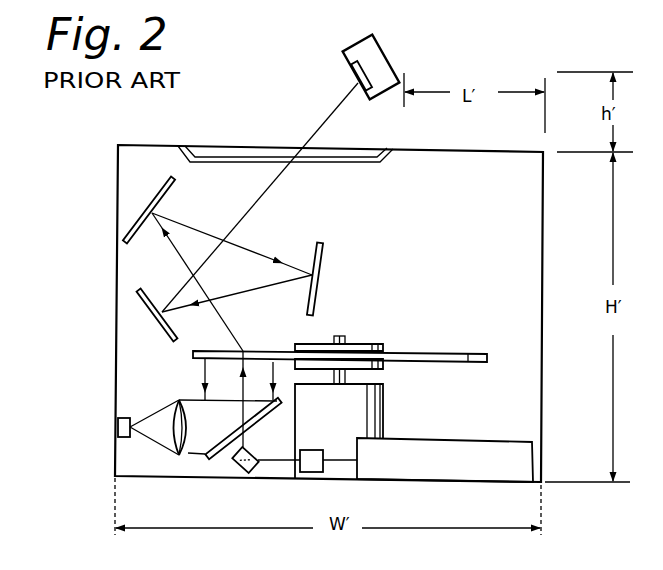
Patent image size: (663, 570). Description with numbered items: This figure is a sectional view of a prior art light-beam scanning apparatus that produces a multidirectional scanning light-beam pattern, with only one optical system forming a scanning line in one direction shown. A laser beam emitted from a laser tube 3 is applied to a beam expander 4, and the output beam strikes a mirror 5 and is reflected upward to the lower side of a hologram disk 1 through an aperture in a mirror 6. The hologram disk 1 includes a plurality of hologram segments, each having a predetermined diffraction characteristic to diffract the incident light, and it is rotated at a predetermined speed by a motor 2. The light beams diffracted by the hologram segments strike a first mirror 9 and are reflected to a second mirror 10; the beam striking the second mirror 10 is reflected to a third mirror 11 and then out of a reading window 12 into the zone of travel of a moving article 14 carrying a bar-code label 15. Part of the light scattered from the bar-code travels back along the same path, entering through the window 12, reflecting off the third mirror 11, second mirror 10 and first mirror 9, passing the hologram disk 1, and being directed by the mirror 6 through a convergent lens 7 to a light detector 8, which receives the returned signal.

The hologram disk 1 is at (465, 351).
The motor 2 is at (383, 398).
The laser tube 3 is at (477, 477).
The beam expander 4 is at (312, 472).
The mirror 5 is at (245, 472).
The mirror 6 is at (270, 413).
The convergent lens 7 is at (173, 458).
The light detector 8 is at (118, 427).
The first mirror 9 is at (152, 203).
The second mirror 10 is at (322, 268).
The third mirror 11 is at (145, 312).
The reading window 12 is at (393, 157).
The moving article 14 is at (387, 58).
The bar-code label 15 is at (352, 74).